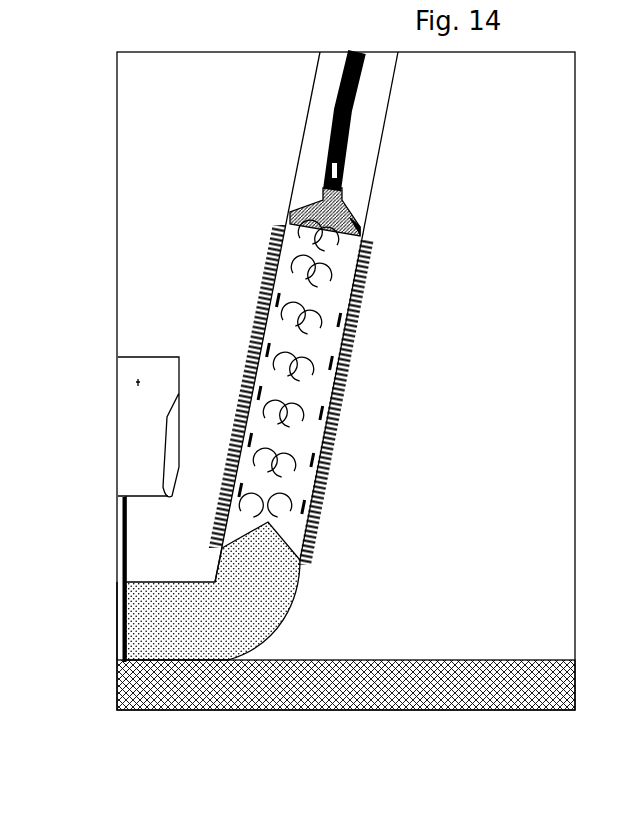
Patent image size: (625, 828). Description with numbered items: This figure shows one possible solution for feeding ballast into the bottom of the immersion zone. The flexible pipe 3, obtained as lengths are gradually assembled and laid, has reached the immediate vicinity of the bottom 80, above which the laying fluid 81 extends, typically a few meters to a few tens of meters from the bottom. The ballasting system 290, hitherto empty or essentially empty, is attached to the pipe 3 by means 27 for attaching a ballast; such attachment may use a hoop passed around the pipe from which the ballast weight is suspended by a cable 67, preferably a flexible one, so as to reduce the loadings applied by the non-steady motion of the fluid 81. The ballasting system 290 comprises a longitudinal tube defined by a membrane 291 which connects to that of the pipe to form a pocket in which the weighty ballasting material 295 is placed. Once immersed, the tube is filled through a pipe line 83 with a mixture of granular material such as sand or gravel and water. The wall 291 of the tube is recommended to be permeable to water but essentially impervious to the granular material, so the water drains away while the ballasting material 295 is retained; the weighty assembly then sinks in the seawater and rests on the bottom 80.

The pipe 3 is at (133, 352).
The means for attaching a ballast 27 is at (118, 633).
The cable 67 is at (118, 547).
The bottom 80 is at (525, 660).
The laying fluid 81 is at (521, 265).
The pipe line 83 is at (363, 91).
The ballasting system 290 is at (290, 622).
The membrane 291 is at (383, 159).
The ballasting material 295 is at (209, 642).